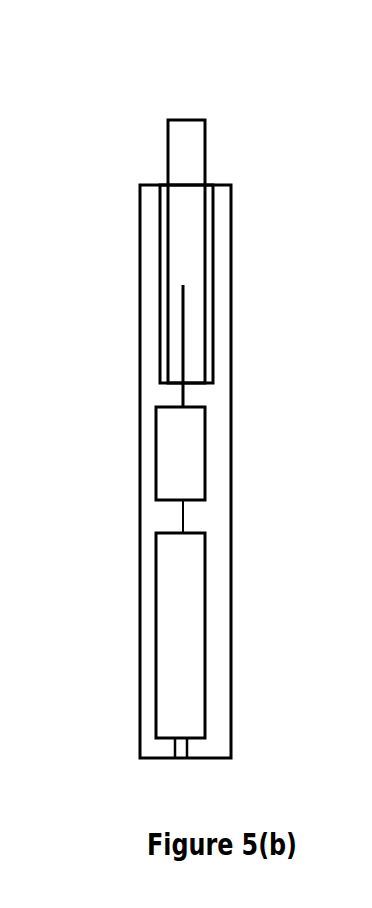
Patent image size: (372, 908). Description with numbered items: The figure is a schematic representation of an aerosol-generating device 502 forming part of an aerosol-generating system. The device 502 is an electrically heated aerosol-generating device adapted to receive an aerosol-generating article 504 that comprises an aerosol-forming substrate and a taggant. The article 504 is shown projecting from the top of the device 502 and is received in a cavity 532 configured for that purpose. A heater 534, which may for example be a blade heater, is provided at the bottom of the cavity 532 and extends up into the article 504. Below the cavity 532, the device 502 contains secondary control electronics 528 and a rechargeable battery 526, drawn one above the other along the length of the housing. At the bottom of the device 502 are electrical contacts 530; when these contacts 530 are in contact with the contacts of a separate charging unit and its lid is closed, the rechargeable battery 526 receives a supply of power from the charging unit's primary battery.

The aerosol-generating device 502 is at (82, 194).
The aerosol-generating article 504 is at (188, 116).
The rechargeable battery 526 is at (167, 580).
The secondary control electronics 528 is at (167, 428).
The electrical contacts 530 is at (170, 740).
The cavity 532 is at (162, 243).
The heater 534 is at (183, 297).